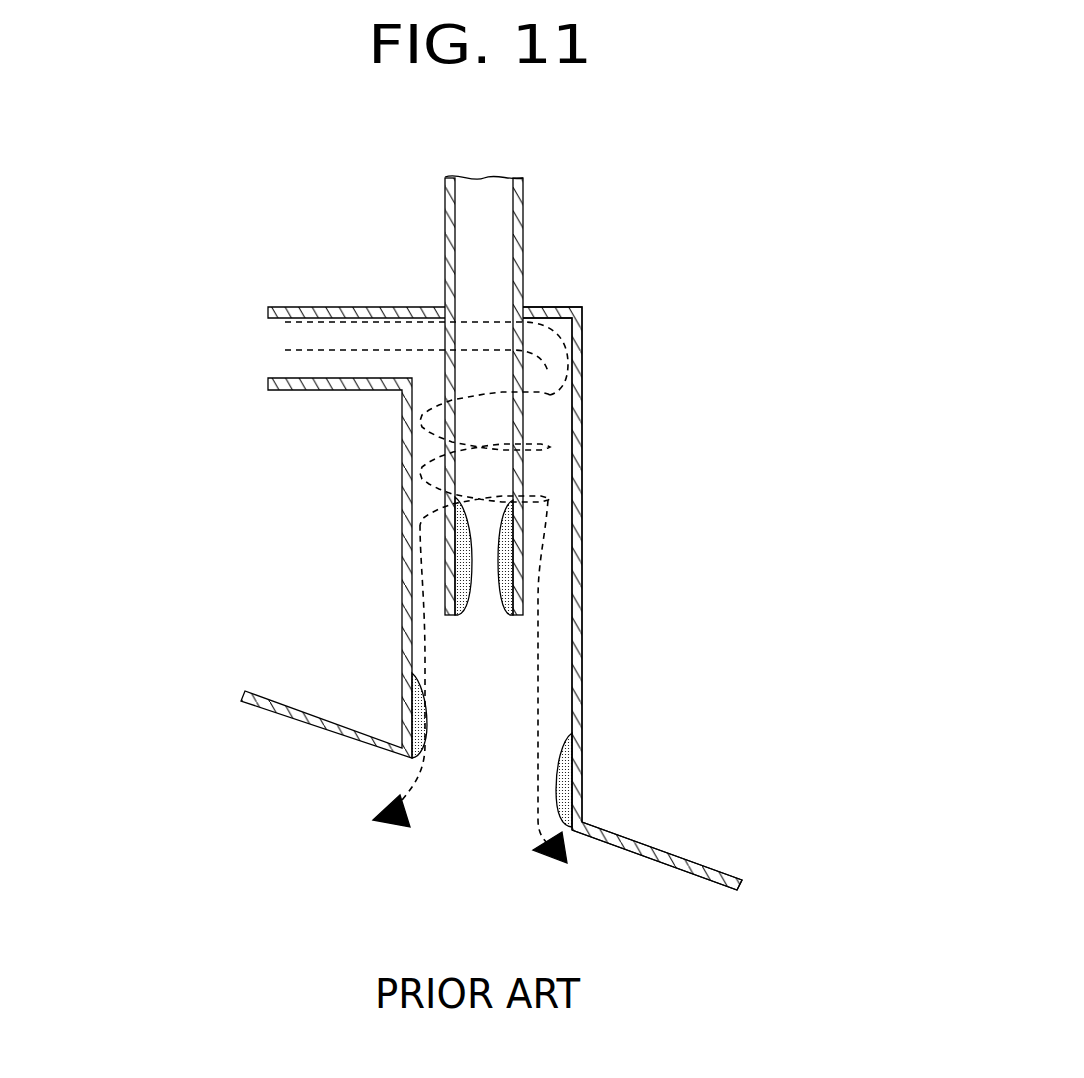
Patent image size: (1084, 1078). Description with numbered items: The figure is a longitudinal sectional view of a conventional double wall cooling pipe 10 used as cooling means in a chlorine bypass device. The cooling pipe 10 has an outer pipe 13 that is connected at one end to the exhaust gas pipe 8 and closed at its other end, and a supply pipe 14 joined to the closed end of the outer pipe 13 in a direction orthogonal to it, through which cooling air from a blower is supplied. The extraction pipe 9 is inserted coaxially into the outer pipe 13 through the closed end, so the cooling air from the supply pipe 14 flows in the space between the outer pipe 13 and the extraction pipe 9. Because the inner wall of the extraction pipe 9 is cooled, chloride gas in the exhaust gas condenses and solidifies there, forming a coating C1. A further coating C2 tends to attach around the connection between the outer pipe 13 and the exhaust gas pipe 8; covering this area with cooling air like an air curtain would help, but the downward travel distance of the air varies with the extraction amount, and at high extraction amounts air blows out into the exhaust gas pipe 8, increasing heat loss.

The exhaust gas pipe 8 is at (723, 877).
The extraction pipe 9 is at (522, 212).
The cooling pipe 10 is at (509, 598).
The outer pipe 13 is at (582, 612).
The supply pipe 14 is at (310, 392).
The coating C1 is at (466, 610).
The coating C2 is at (416, 712).